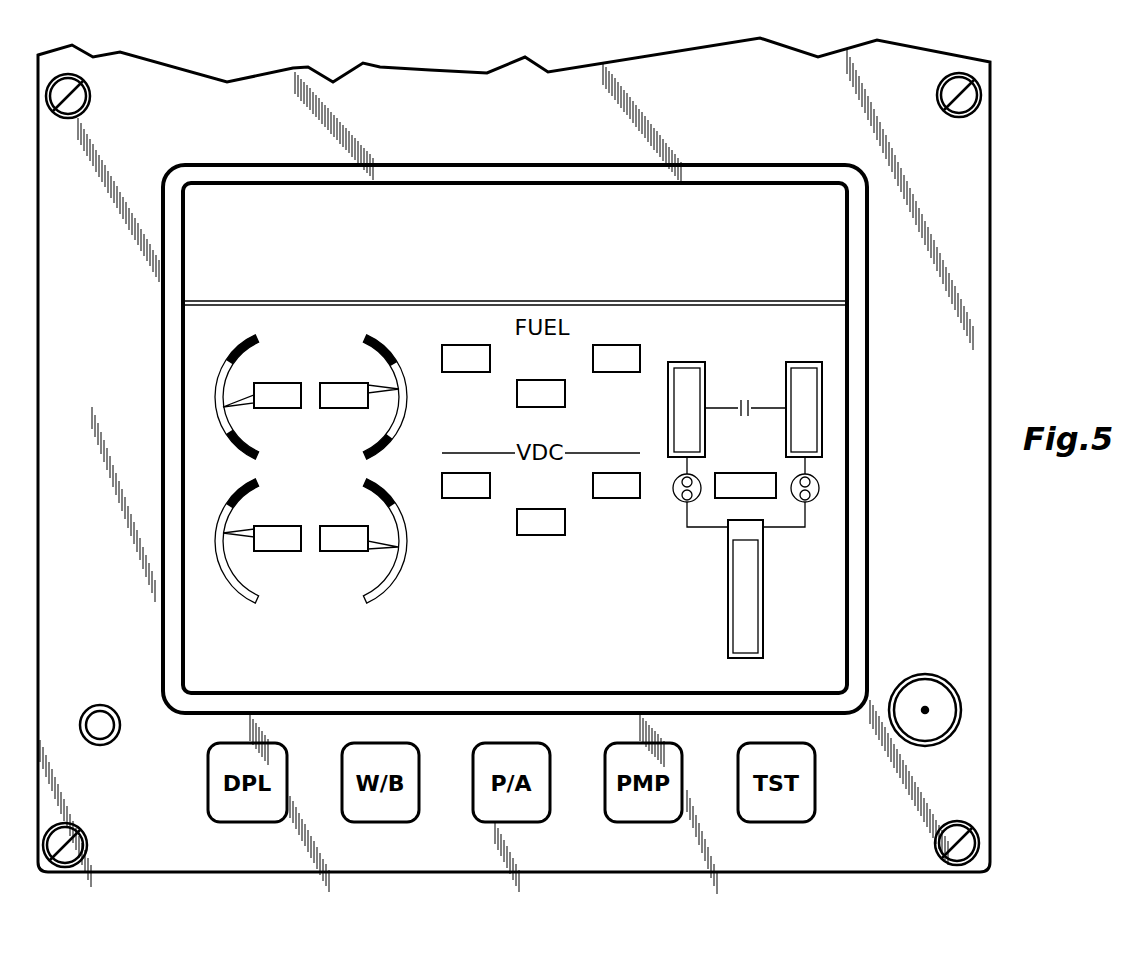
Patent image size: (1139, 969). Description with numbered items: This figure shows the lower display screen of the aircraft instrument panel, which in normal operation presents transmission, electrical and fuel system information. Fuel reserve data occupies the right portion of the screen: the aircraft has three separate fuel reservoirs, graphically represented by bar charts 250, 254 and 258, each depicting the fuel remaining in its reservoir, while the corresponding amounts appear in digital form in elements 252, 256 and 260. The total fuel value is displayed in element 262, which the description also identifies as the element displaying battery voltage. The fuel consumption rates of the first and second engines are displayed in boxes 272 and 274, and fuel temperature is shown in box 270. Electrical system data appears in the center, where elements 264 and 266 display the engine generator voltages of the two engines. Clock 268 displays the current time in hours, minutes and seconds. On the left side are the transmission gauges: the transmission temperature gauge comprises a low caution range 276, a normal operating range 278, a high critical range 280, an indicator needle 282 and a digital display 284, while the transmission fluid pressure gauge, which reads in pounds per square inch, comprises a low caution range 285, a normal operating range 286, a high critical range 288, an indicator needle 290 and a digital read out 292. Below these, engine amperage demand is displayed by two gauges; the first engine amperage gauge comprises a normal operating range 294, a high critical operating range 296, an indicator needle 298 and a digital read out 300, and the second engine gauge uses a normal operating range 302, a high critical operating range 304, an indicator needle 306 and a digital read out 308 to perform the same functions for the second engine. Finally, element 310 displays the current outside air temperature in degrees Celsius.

The fuel reservoir bar chart 250 is at (779, 482).
The digital fuel amount display 252 is at (687, 345).
The fuel reservoir bar chart 254 is at (822, 395).
The digital fuel amount display 256 is at (805, 345).
The fuel reservoir bar chart 258 is at (763, 600).
The digital fuel amount display 260 is at (745, 685).
The total fuel and battery voltage element 262 is at (545, 536).
The engine generator voltage element 264 is at (475, 499).
The engine generator voltage element 266 is at (617, 499).
The clock 268 is at (548, 678).
The fuel temperature box 270 is at (517, 388).
The fuel consumption rate box 272 is at (472, 345).
The fuel consumption rate box 274 is at (617, 345).
The low caution range 276 is at (237, 447).
The normal operating range 278 is at (228, 372).
The high critical range 280 is at (286, 333).
The indicator needle 282 is at (240, 400).
The digital display 284 is at (278, 408).
The low caution range 285 is at (388, 450).
The normal operating range 286 is at (405, 400).
The high critical range 288 is at (398, 365).
The indicator needle 290 is at (375, 350).
The digital read out 292 is at (344, 408).
The normal operating range 294 is at (228, 575).
The high critical operating range 296 is at (296, 539).
The indicator needle 298 is at (240, 536).
The digital read out 300 is at (278, 551).
The normal operating range 302 is at (385, 596).
The high critical operating range 304 is at (393, 493).
The indicator needle 306 is at (375, 547).
The digital read out 308 is at (340, 551).
The OAT display element 310 is at (307, 679).